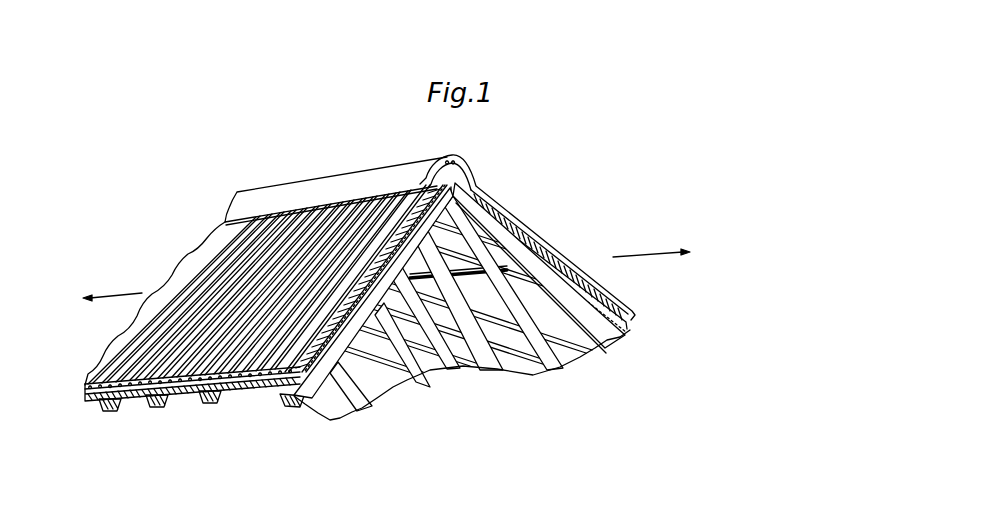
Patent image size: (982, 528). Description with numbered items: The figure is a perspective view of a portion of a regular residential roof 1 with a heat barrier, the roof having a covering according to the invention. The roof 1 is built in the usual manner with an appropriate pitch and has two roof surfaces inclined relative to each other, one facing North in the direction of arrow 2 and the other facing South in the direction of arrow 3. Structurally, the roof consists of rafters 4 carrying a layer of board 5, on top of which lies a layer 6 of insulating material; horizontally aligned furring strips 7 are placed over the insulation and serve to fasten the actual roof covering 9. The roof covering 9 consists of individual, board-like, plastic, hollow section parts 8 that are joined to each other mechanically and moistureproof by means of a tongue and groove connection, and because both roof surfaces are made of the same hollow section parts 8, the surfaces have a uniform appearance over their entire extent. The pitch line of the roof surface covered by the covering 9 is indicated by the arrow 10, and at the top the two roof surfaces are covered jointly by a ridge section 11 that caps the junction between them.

The roof 1 is at (526, 162).
The arrow 2 is at (648, 253).
The arrow 3 is at (120, 292).
The rafters 4 is at (478, 352).
The layer of board 5 is at (580, 348).
The layer of insulating material 6 is at (207, 410).
The furring strips 7 is at (414, 226).
The hollow section parts 8 is at (92, 378).
The roof covering 9 is at (198, 280).
The arrow 10 is at (135, 413).
The ridge section 11 is at (338, 182).